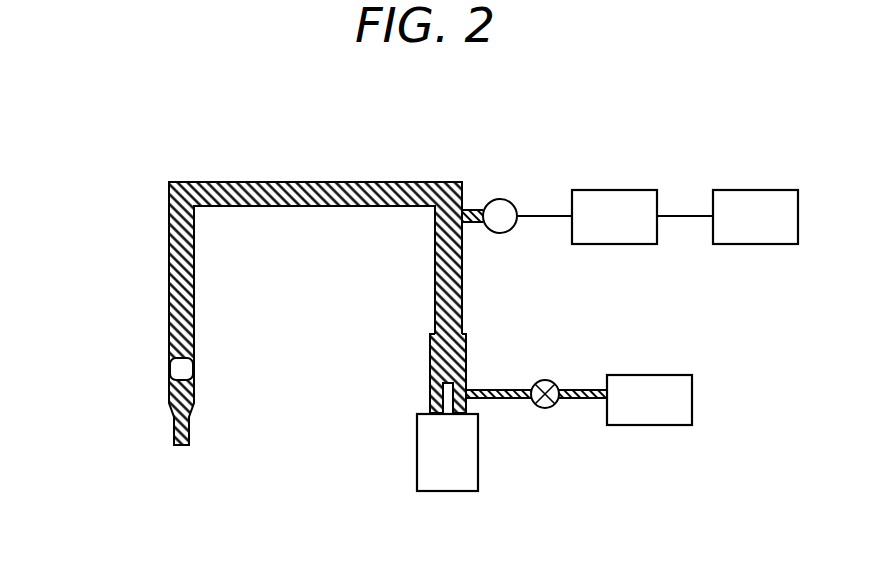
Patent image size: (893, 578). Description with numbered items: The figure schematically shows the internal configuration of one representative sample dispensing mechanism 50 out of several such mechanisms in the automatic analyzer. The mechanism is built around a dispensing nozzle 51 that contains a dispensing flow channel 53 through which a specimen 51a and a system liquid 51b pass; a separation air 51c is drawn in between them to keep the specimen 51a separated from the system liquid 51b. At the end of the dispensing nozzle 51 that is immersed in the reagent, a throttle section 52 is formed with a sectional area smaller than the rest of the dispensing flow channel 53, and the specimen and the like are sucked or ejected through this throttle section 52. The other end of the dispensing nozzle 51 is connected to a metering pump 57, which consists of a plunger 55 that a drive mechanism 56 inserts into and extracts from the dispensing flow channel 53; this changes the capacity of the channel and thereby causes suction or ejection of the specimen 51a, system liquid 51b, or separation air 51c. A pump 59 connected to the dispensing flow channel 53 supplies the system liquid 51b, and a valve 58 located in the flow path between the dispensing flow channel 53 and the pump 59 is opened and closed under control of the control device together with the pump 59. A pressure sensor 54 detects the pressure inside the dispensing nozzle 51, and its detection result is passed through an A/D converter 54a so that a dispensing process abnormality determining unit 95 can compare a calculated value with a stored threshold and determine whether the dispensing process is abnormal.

The sample dispensing mechanism 50 is at (433, 313).
The dispensing nozzle 51 is at (265, 276).
The specimen 51a is at (194, 399).
The system liquid 51b is at (315, 155).
The separation air 51c is at (169, 366).
The throttle section 52 is at (176, 426).
The dispensing flow channel 53 is at (247, 181).
The pressure sensor 54 is at (496, 198).
The A/D converter 54a is at (607, 190).
The dispensing process abnormality determining unit 95 is at (754, 190).
The plunger 55 is at (432, 389).
The drive mechanism 56 is at (418, 450).
The metering pump 57 is at (441, 440).
The valve 58 is at (549, 378).
The pump 59 is at (645, 375).